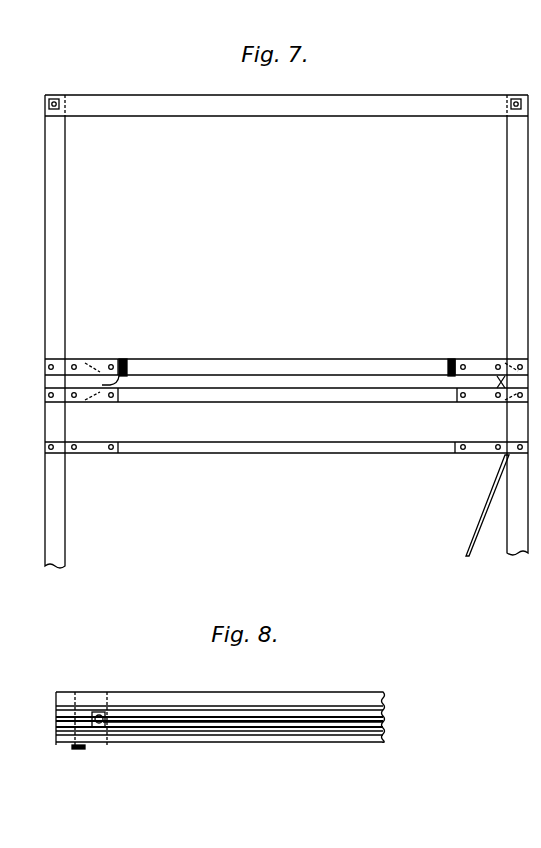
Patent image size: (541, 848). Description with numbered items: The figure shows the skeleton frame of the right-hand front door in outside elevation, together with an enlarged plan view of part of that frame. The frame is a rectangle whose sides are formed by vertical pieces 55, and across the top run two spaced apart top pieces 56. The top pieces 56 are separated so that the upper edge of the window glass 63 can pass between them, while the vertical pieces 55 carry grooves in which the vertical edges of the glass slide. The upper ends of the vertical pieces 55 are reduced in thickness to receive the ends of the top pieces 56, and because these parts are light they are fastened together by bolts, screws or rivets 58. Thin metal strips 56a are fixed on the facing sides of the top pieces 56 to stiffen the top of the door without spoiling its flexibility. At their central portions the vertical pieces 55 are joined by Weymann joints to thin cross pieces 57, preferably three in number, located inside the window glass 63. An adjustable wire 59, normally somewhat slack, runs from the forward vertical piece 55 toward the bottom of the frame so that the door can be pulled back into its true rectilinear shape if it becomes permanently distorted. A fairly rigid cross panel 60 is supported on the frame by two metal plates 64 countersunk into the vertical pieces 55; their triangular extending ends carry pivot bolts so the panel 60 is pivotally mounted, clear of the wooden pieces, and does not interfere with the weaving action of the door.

In FIG. 7, the vertical pieces 55 is at (63, 267).
In FIG. 8, the vertical pieces 55 is at (63, 718).
In FIG. 7, the top pieces 56 is at (255, 100).
In FIG. 8, the top pieces 56 is at (193, 697).
In FIG. 8, the thin metal strips 56a is at (260, 730).
In FIG. 7, the cross pieces 57 is at (243, 368).
In FIG. 7, the bolts, screws or rivets 58 is at (60, 103).
In FIG. 8, the bolts, screws or rivets 58 is at (80, 751).
In FIG. 7, the adjustable wire 59 is at (483, 507).
In FIG. 7, the cross panel 60 is at (313, 387).
In FIG. 8, the window glass 63 is at (138, 718).
In FIG. 7, the metal plates 64 is at (97, 384).